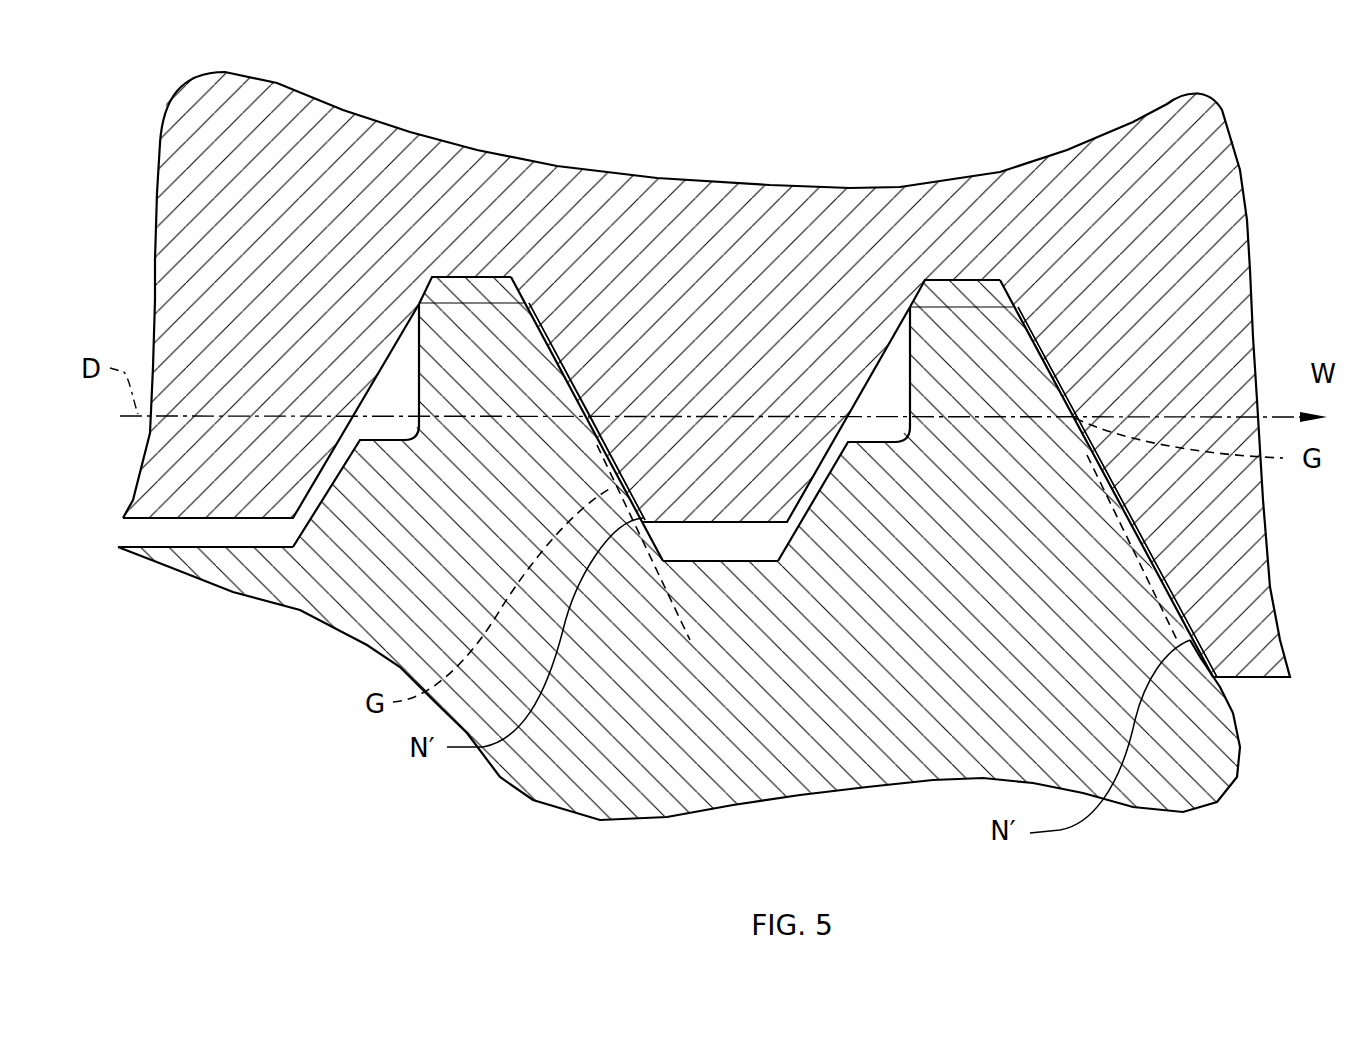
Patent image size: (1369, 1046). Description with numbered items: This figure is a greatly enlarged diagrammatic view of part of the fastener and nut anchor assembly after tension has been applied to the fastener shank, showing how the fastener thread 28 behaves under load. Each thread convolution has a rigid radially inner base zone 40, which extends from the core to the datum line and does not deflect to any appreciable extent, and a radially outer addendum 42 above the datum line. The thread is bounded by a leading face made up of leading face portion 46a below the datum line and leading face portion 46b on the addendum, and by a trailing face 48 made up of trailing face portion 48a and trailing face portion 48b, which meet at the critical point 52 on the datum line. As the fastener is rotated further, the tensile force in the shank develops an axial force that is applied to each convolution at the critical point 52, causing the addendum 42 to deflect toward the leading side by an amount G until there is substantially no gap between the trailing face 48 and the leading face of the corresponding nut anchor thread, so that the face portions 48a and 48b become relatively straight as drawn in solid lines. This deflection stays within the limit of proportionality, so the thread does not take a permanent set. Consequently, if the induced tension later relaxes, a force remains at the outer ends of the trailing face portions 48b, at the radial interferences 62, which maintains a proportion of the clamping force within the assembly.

The thread 28 is at (993, 520).
The base zone 40 is at (1073, 482).
The addendum 42 is at (540, 327).
The leading face portion 46a is at (352, 452).
The leading face portion 46b is at (417, 357).
The trailing face 48 is at (1153, 563).
The trailing face portion 48a is at (607, 460).
The trailing face portion 48b is at (520, 347).
The critical point 52 is at (580, 413).
The radial interferences 62 is at (492, 288).